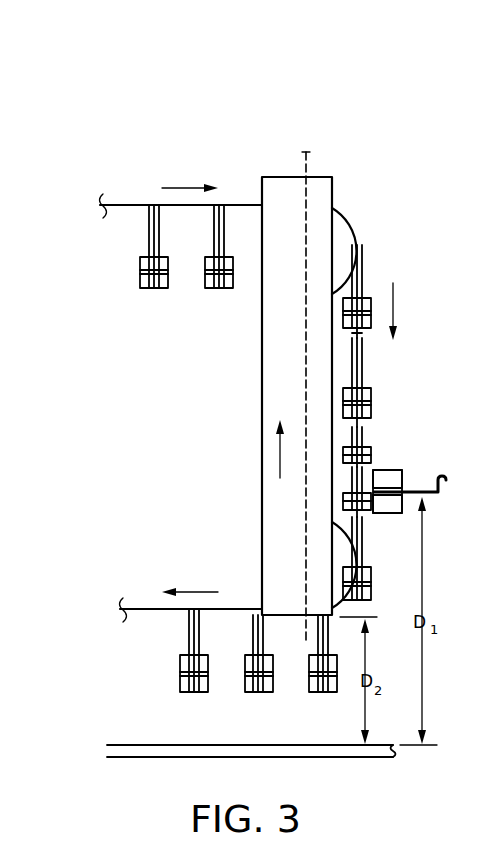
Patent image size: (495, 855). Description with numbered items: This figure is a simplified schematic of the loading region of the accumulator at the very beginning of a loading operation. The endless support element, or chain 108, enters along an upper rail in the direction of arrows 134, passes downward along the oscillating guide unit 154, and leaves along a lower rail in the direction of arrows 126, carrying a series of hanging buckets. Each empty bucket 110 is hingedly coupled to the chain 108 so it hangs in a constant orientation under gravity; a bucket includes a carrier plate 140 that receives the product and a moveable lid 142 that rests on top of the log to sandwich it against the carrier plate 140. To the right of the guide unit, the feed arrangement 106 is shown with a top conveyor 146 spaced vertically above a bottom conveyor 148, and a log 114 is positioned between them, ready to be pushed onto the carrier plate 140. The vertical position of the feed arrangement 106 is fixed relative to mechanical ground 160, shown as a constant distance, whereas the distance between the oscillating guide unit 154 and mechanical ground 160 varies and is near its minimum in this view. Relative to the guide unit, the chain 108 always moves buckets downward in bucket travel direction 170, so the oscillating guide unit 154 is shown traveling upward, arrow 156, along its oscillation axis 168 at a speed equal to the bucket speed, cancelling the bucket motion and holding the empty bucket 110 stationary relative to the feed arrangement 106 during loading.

The oscillating guide unit 154 is at (282, 140).
The oscillation axis 168 is at (310, 152).
The endless support element (chain) 108 is at (127, 205).
The arrows 134 is at (187, 186).
The bucket travel direction 170 is at (394, 300).
The empty bucket 110 is at (368, 433).
The moveable lid 142 is at (340, 455).
The carrier plate 140 is at (340, 498).
The arrow (upward oscillation) 156 is at (278, 455).
The bottom conveyor 148 is at (393, 470).
The top conveyor 146 is at (387, 513).
The log 114 is at (403, 483).
The feed arrangement 106 is at (414, 454).
The arrows 126 is at (197, 590).
The mechanical ground 160 is at (148, 745).